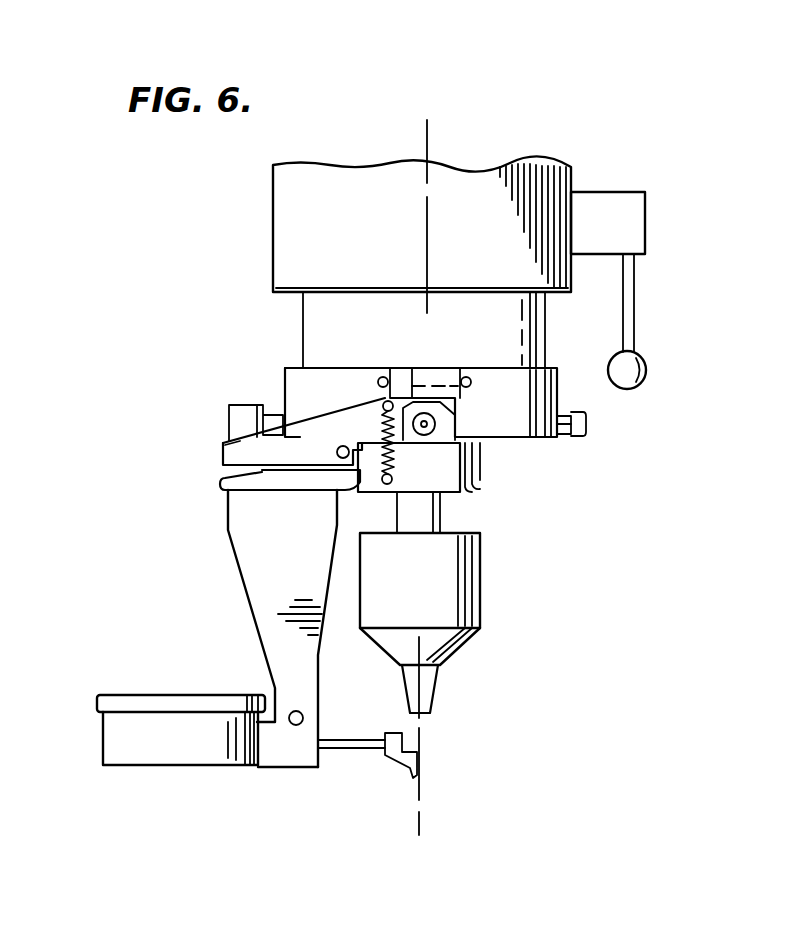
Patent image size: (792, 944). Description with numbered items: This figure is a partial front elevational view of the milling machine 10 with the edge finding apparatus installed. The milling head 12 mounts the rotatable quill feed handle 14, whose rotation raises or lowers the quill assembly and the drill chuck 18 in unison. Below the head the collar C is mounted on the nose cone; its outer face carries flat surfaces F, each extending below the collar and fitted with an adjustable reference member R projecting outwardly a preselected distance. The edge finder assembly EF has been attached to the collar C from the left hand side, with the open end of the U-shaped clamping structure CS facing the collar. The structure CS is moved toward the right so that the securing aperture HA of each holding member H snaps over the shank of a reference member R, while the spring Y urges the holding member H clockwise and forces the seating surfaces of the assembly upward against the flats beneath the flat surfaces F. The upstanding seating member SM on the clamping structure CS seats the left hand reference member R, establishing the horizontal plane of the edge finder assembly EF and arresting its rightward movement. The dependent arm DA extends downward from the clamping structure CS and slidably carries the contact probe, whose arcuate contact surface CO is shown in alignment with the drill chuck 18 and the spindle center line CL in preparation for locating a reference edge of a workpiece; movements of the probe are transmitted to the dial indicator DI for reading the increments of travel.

The milling machine 10 is at (212, 318).
The milling head 12 is at (504, 165).
The quill feed handle 14 is at (648, 372).
The drill chuck 18 is at (480, 575).
The center line CL is at (427, 130).
The collar C is at (562, 370).
The flat surfaces F is at (443, 380).
The securing aperture HA is at (410, 415).
The holding members H is at (318, 432).
The U-shaped clamping structure CS is at (235, 447).
The seating member SM is at (233, 405).
The edge finder assembly EF is at (218, 501).
The spring Y is at (375, 470).
The reference member R is at (586, 425).
The dependent arm DA is at (262, 598).
The dial indicator DI is at (172, 766).
The contact surface CO is at (422, 766).